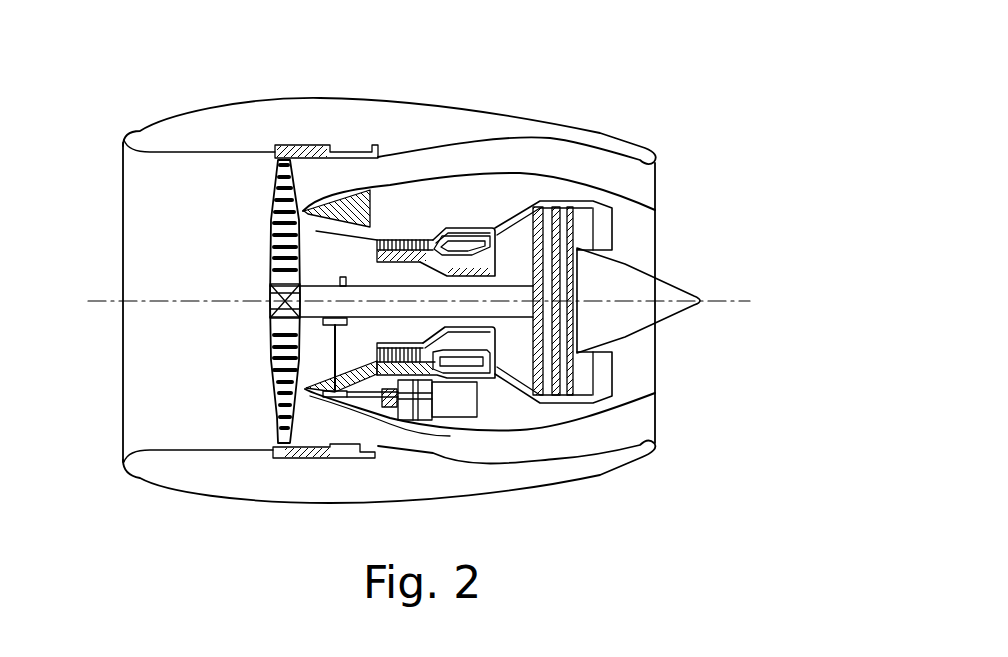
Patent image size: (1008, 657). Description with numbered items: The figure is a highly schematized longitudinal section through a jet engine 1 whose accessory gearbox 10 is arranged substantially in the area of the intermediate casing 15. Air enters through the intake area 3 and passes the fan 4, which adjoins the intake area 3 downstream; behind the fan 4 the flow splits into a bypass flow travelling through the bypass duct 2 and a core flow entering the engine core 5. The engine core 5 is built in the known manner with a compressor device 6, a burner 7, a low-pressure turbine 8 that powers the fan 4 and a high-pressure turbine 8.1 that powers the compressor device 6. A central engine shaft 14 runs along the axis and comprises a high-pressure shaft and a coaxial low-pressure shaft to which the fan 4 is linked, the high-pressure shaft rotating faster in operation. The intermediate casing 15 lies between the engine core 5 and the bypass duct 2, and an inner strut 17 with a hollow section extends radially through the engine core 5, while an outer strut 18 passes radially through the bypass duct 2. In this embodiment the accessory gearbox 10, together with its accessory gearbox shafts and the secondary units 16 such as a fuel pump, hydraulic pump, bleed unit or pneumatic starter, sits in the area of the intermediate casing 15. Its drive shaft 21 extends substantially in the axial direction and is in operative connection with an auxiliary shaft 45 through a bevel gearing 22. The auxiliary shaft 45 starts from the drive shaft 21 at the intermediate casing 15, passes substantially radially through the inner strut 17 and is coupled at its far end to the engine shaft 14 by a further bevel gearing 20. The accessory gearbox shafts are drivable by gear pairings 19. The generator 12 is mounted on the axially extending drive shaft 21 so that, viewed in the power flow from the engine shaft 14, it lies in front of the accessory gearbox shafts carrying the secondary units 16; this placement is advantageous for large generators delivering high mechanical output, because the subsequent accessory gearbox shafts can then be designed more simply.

The jet engine 1 is at (112, 55).
The bypass duct 2 is at (592, 166).
The intake area 3 is at (142, 206).
The fan 4 is at (273, 175).
The engine core 5 is at (372, 243).
The compressor device 6 is at (418, 247).
The burner 7 is at (467, 240).
The low-pressure turbine 8 is at (578, 212).
The high-pressure turbine 8.1 is at (547, 385).
The accessory gearbox 10 is at (440, 432).
The generator 12 is at (390, 408).
The engine shaft 14 is at (527, 300).
The intermediate casing 15 is at (338, 428).
The secondary units 16 is at (460, 418).
The inner strut 17 is at (330, 391).
The outer strut 18 is at (317, 410).
The gear pairings 19 is at (415, 420).
The bevel gearing 20 is at (330, 284).
The drive shaft 21 is at (295, 444).
The bevel gearing 22 is at (310, 393).
The auxiliary shaft 45 is at (272, 285).